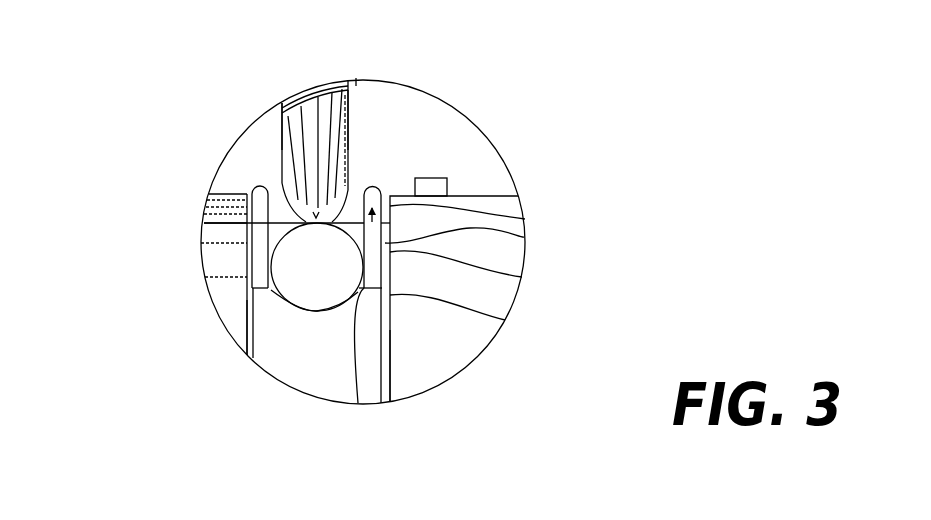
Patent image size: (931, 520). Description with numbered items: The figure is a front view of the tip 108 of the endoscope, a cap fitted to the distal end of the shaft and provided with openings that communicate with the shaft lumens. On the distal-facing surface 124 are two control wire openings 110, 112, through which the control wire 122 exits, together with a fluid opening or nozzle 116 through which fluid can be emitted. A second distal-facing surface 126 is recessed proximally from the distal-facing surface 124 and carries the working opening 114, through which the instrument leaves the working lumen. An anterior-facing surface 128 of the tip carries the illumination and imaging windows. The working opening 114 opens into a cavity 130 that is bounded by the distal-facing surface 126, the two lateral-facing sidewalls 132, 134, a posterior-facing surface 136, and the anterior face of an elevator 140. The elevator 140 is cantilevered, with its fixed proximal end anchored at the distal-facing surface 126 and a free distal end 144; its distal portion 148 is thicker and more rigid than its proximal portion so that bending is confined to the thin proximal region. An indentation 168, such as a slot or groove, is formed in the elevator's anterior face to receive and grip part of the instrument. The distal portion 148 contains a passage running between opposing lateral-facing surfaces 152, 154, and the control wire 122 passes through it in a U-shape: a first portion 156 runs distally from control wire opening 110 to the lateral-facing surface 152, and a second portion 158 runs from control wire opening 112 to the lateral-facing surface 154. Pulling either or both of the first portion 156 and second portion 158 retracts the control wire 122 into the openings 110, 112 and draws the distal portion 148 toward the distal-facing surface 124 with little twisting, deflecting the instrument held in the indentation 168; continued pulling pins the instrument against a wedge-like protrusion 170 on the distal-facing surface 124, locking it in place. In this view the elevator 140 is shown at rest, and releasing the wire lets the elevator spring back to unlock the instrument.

The tip 108 is at (148, 102).
The control wire opening 110 is at (252, 191).
The control wire opening 112 is at (371, 187).
The working opening 114 is at (278, 277).
The fluid opening or nozzle 116 is at (431, 178).
The control wire 122 is at (250, 268).
The distal-facing surface 124 is at (356, 82).
The distal-facing surface 126 is at (375, 257).
The anterior-facing surface 128 is at (503, 196).
The cavity 130 is at (522, 277).
The lateral-facing sidewall 132 is at (247, 322).
The lateral-facing sidewall 134 is at (505, 320).
The posterior-facing surface 136 is at (347, 185).
The elevator 140 is at (253, 364).
The free distal end 144 is at (333, 385).
The distal portion 148 is at (305, 357).
The lateral-facing surface 152 is at (246, 345).
The lateral-facing surface 154 is at (382, 333).
The first portion 156 is at (247, 234).
The second portion 158 is at (525, 219).
The indentation 168 is at (354, 404).
The protrusion 170 is at (281, 136).